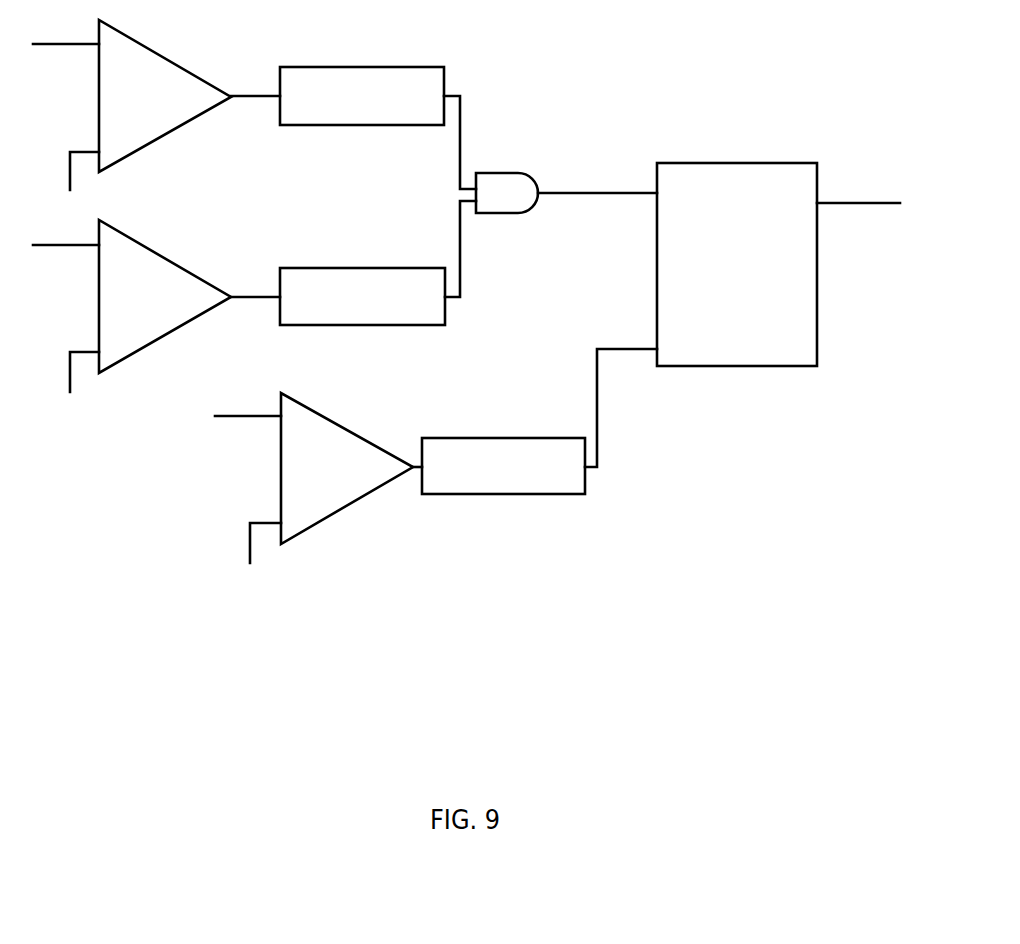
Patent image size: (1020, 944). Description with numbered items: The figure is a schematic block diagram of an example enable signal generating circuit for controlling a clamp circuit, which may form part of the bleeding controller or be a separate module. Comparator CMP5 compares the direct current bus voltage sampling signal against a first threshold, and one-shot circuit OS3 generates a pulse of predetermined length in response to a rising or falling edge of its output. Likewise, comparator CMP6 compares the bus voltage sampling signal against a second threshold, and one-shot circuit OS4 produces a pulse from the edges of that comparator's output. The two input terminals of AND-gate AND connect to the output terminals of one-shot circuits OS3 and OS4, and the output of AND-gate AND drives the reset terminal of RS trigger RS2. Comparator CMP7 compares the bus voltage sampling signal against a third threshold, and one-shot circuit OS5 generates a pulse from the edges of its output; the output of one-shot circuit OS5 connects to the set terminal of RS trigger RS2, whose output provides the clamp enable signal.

The comparator CMP5 is at (119, 101).
The comparator CMP6 is at (119, 302).
The comparator CMP7 is at (303, 473).
The one-shot circuit OS3 is at (353, 128).
The one-shot circuit OS4 is at (353, 263).
The one-shot circuit OS5 is at (535, 421).
The AND-gate AND is at (566, 208).
The RS trigger RS2 is at (789, 264).